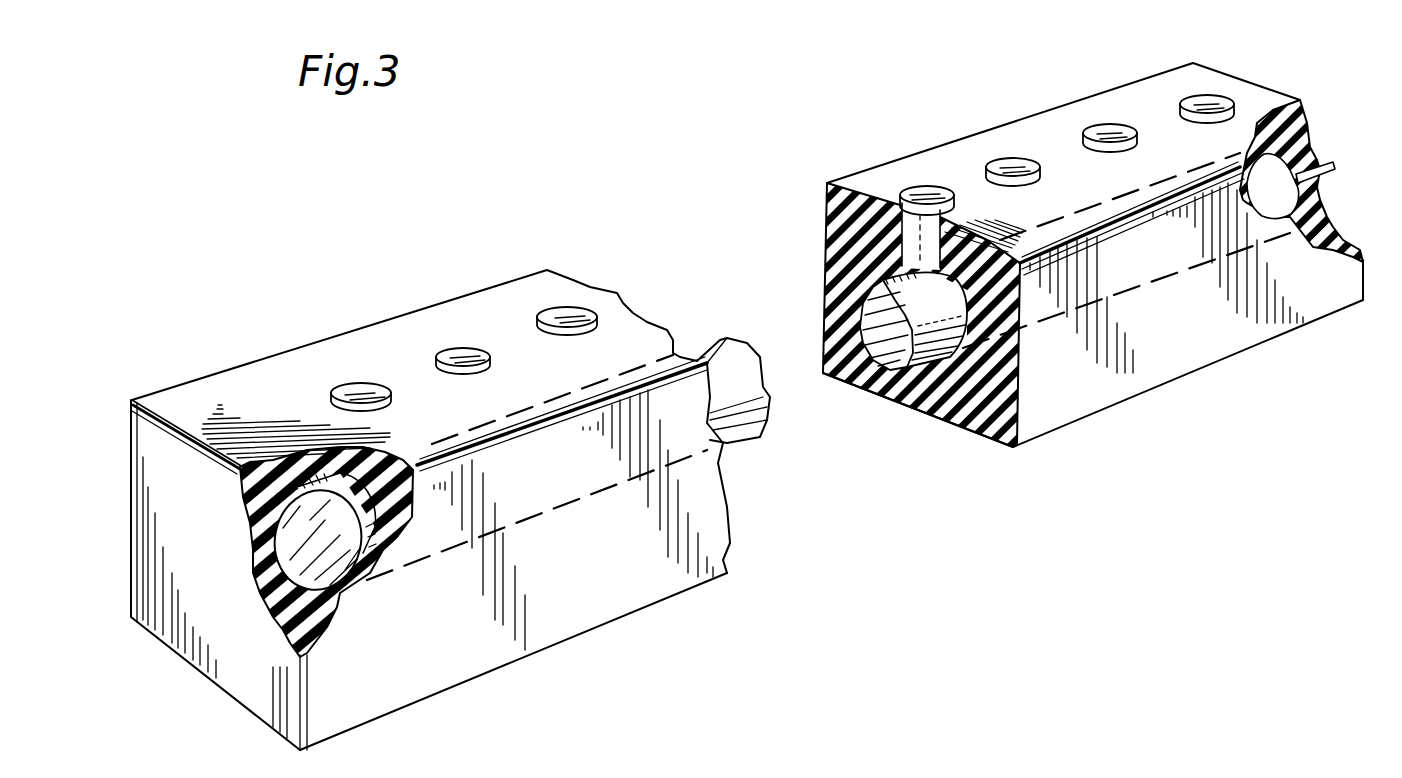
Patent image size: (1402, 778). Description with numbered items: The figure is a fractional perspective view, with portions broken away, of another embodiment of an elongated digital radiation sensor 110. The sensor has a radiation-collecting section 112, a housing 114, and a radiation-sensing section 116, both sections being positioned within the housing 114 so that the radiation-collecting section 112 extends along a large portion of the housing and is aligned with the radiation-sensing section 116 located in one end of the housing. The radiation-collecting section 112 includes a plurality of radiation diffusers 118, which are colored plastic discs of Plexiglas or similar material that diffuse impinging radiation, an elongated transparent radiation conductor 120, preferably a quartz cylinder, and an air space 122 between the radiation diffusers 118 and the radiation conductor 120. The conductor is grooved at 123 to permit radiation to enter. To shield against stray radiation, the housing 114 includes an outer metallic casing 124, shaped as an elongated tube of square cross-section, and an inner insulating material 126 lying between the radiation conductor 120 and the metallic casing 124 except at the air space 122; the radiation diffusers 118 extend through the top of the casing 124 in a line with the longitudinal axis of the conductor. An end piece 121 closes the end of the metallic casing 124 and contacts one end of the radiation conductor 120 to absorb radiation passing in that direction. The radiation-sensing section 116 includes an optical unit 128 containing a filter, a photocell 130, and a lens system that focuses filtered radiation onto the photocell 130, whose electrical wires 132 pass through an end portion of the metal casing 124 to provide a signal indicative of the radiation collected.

The elongated digital radiation sensor 110 is at (1063, 60).
The radiation-collecting section 112 is at (990, 77).
The housing 114 is at (947, 437).
The radiation-sensing section 116 is at (1321, 124).
The radiation diffusers 118 is at (369, 382).
The radiation conductor 120 is at (830, 283).
The end piece 121 is at (160, 540).
The air space 122 is at (830, 229).
The groove 123 is at (880, 290).
The outer metallic casing 124 is at (1037, 423).
The inner insulating material 126 is at (927, 390).
The optical unit 128 is at (1270, 167).
The photocell 130 is at (1290, 233).
The electrical wires 132 is at (1357, 142).